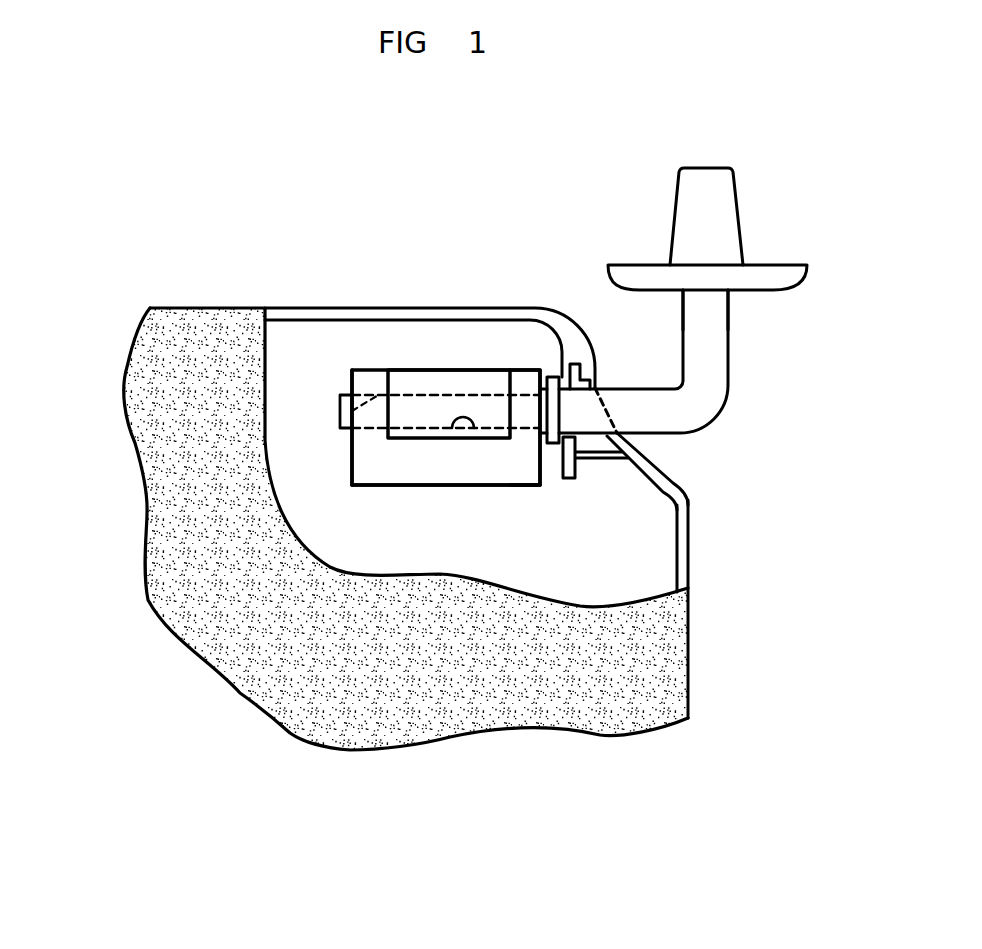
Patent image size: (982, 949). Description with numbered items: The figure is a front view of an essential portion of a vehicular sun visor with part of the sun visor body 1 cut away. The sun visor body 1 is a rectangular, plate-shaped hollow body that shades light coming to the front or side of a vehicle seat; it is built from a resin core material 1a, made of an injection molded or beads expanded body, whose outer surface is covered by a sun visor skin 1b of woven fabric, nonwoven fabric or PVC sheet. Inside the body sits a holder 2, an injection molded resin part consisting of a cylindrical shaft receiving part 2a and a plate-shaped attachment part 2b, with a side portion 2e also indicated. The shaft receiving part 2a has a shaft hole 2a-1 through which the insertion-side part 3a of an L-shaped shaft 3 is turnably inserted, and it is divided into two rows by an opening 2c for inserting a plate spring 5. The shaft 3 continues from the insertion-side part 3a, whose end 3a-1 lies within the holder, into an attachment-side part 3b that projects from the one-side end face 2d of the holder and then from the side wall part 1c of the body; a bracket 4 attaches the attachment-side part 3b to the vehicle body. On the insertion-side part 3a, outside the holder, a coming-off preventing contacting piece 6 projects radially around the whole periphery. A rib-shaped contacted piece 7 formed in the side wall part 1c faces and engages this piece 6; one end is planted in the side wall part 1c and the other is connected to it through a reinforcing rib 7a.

The sun visor body 1 is at (207, 684).
The resin core material 1a is at (655, 513).
The sun visor skin 1b is at (428, 703).
The side wall part 1c is at (680, 487).
The holder 2 is at (386, 497).
The shaft receiving part 2a is at (538, 370).
The shaft hole 2a-1 is at (342, 415).
The attachment part 2b is at (518, 487).
The opening 2c is at (453, 430).
The one-side end face 2d is at (546, 482).
The housing side portion 2e is at (353, 448).
The shaft 3 is at (690, 367).
The insertion-side part 3a is at (643, 398).
The lever shaft end 3a-1 is at (340, 421).
The attachment-side part 3b is at (708, 353).
The bracket 4 is at (735, 237).
The plate spring 5 is at (448, 368).
The coming-off preventing contacting piece 6 is at (552, 377).
The contacted piece 7 is at (612, 457).
The reinforcing rib 7a is at (578, 480).